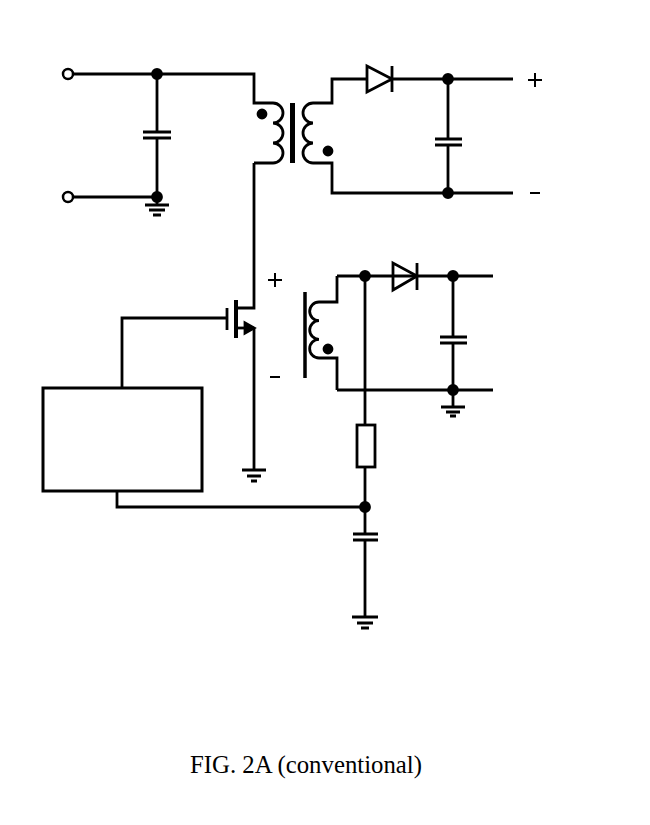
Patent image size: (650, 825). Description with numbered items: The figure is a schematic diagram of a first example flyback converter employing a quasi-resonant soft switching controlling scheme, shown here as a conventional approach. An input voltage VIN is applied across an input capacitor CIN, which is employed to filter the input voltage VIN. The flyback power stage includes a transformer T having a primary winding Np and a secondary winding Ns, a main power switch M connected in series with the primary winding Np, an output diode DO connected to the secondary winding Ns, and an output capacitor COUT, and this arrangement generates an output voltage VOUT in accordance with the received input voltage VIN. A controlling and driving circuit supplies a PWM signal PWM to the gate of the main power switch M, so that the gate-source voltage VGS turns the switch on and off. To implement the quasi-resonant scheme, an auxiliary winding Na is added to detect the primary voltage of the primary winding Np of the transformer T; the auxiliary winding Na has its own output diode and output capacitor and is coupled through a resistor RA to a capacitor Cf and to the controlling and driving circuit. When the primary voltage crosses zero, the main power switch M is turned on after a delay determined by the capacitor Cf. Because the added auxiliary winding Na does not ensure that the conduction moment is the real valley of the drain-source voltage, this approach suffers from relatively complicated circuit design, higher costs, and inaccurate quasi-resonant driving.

The input voltage VIN is at (53, 143).
The input capacitor CIN is at (175, 144).
The transformer T is at (381, 125).
The primary winding Np is at (266, 133).
The secondary winding Ns is at (408, 136).
The output diode DO is at (440, 161).
The output capacitor COUT is at (427, 247).
The output voltage VOUT is at (530, 140).
The main power switch M is at (236, 304).
The gate-source voltage VGS is at (278, 326).
The PWM signal PWM is at (122, 415).
The auxiliary winding Na is at (330, 333).
The auxiliary resistor RA is at (348, 446).
The capacitor Cf is at (349, 567).